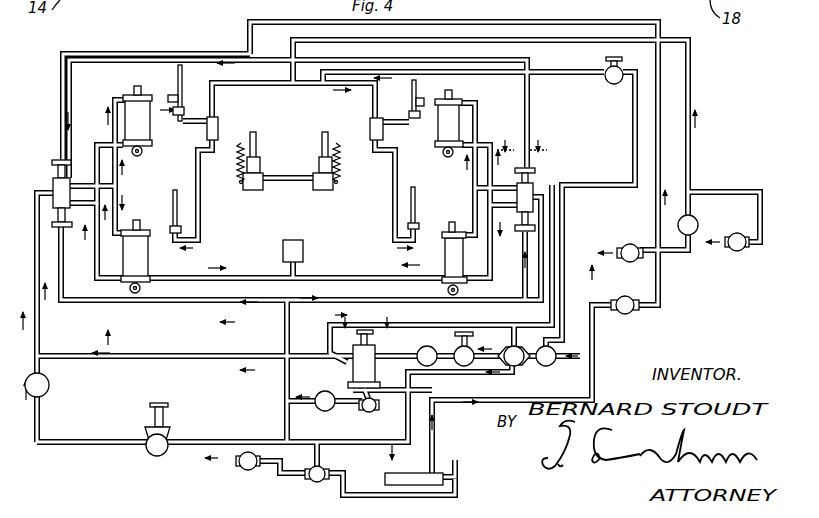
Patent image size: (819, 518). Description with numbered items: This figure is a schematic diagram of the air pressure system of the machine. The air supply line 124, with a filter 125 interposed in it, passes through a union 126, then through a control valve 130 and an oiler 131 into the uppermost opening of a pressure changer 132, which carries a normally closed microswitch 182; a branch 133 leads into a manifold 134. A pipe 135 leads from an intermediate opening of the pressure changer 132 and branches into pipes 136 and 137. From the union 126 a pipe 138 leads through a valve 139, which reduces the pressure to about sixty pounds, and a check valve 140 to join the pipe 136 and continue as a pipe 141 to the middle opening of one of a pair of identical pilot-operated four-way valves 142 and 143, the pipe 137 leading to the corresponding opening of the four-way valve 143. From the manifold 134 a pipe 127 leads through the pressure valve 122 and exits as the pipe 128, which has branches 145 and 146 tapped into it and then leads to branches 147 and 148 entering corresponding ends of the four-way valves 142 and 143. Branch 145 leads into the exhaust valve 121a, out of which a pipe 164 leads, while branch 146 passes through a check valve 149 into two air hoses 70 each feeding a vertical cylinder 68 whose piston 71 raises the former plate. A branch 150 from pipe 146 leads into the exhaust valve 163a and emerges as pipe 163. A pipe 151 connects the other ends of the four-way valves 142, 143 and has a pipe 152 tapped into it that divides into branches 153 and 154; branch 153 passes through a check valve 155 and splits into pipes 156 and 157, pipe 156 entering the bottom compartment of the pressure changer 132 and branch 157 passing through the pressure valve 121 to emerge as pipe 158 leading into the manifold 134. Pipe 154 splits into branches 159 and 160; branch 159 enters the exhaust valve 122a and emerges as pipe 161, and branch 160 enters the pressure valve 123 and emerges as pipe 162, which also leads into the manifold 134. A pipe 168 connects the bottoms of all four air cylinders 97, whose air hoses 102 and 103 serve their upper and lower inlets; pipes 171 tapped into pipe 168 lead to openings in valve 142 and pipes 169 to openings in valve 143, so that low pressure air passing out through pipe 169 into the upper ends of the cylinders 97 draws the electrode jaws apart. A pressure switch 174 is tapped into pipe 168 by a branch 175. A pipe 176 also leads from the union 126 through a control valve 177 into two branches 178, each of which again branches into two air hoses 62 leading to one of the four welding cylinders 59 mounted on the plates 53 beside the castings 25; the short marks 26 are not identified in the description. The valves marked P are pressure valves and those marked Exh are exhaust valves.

The casting 25 is at (375, 335).
The vent line 26 is at (526, 141).
The plate 53 is at (183, 82).
The welding cylinder 59 is at (172, 95).
The air hose 62 is at (196, 170).
The vertical cylinder 68 is at (254, 160).
The air hose 70 is at (300, 182).
The piston 71 is at (490, 205).
The air cylinder 97 is at (151, 129).
The air hose 102 is at (123, 98).
The air hose 103 is at (128, 148).
The pressure valve 121 is at (372, 413).
The exhaust valve 121a is at (632, 243).
The pressure valve 122 is at (626, 315).
The exhaust valve 122a is at (250, 470).
The pressure valve 123 is at (317, 482).
The air supply line 124 is at (550, 365).
The filter 125 is at (516, 367).
The union 126 is at (514, 346).
The pipe 127 is at (434, 412).
The pipe 128 is at (250, 30).
The control valve 130 is at (460, 346).
The oiler 131 is at (418, 350).
The pressure changer 132 is at (372, 370).
The branch 133 is at (404, 445).
The manifold 134 is at (445, 479).
The pipe 135 is at (343, 362).
The pipe 136 is at (137, 359).
The pipe 137 is at (322, 322).
The pipe 138 is at (470, 376).
The valve 139 is at (147, 457).
The check valve 140 is at (50, 388).
The pipe 141 is at (42, 315).
The pilot-operated four-way valve 142 is at (52, 180).
The pilot-operated four-way valve 143 is at (537, 190).
The branch 145 is at (637, 263).
The branch 146 is at (680, 276).
The branch 147 is at (170, 40).
The branch 148 is at (446, 59).
The check valve 149 is at (699, 225).
The branch 150 is at (702, 192).
The pipe 151 is at (160, 305).
The pipe 152 is at (282, 365).
The branch 153 is at (287, 392).
The branch 154 is at (287, 403).
The check valve 155 is at (322, 411).
The pipe 156 is at (396, 392).
The branch 157 is at (362, 413).
The pipe 158 is at (458, 462).
The branch 159 is at (285, 475).
The branch 160 is at (317, 466).
The pipe 161 is at (238, 466).
The pipe 162 is at (346, 494).
The pipe 163 is at (736, 254).
The exhaust line 163a is at (748, 248).
The pipe 164 is at (617, 257).
The pipe 168 is at (258, 258).
The pipes 169 is at (82, 175).
The pipes 171 is at (80, 205).
The pressure switch 174 is at (305, 245).
The branch 175 is at (297, 264).
The pipe 176 is at (635, 170).
The control valve 177 is at (606, 83).
The branches 178 is at (293, 92).
The microswitch 182 is at (370, 335).